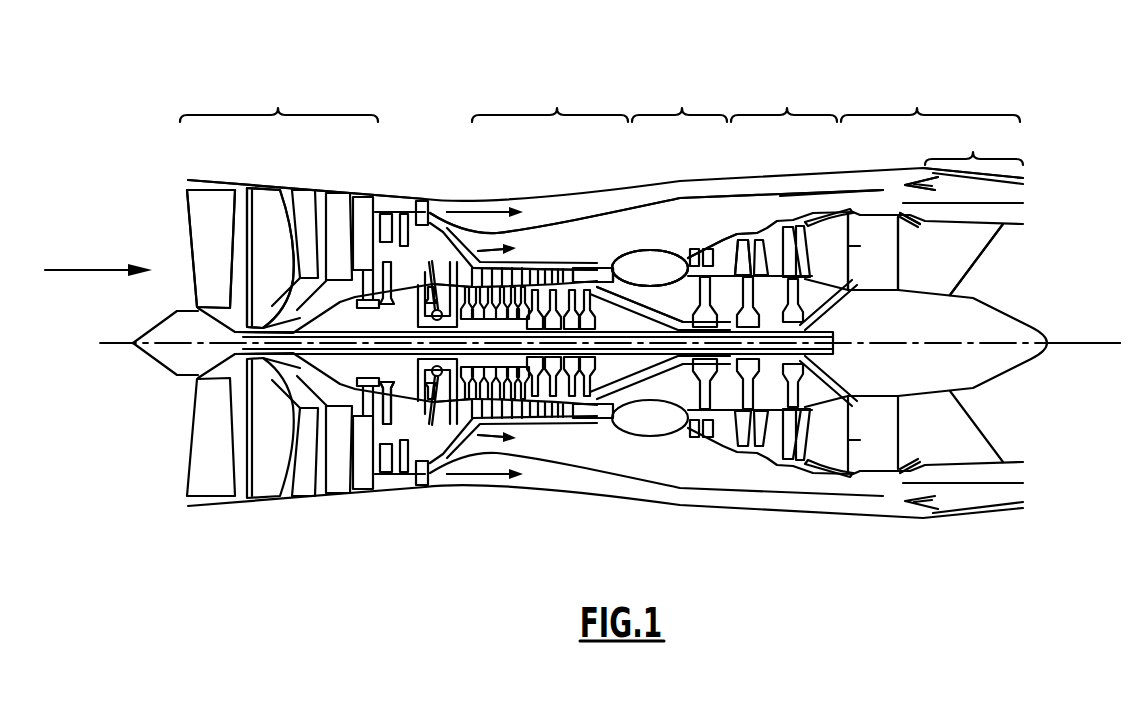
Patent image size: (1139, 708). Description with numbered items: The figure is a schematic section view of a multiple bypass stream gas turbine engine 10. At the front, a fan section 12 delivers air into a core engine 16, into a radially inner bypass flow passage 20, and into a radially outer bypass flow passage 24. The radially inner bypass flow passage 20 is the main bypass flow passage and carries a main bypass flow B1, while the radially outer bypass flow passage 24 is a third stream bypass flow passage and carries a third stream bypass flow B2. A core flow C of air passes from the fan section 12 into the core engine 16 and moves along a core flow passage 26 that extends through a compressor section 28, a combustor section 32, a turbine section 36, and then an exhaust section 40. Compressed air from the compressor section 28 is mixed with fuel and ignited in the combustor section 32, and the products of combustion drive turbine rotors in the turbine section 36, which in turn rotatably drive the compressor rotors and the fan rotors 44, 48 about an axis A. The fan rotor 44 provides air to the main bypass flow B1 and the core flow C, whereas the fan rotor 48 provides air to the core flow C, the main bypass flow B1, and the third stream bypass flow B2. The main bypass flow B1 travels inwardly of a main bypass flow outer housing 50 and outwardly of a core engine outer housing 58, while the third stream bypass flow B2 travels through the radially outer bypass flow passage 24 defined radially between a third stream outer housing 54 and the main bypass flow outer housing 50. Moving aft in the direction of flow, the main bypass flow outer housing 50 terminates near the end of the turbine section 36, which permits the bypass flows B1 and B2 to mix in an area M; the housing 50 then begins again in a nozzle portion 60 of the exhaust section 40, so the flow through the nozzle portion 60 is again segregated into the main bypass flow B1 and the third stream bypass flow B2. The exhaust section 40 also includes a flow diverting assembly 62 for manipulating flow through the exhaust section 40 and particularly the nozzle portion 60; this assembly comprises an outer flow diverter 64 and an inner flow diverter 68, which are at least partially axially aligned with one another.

The engine 10 is at (1000, 78).
The fan section 12 is at (276, 106).
The core engine 16 is at (690, 232).
The radially inner bypass flow passage 20 is at (556, 220).
The radially outer bypass flow passage 24 is at (533, 192).
The core flow passage 26 is at (632, 188).
The compressor section 28 is at (555, 106).
The combustor section 32 is at (680, 106).
The turbine section 36 is at (785, 106).
The exhaust section 40 is at (915, 106).
The fan rotor 44 is at (388, 460).
The fan rotor 48 is at (267, 212).
The main bypass flow outer housing 50 is at (723, 230).
The third stream outer housing 54 is at (594, 255).
The core engine outer housing 58 is at (610, 262).
The nozzle portion 60 is at (973, 148).
The flow diverting assembly 62 is at (972, 262).
The outer flow diverter 64 is at (916, 177).
The inner flow diverter 68 is at (908, 227).
The axis A is at (1093, 343).
The main bypass flow B1 is at (475, 250).
The third stream bypass flow B2 is at (478, 196).
The core flow C is at (437, 262).
The area M is at (889, 176).